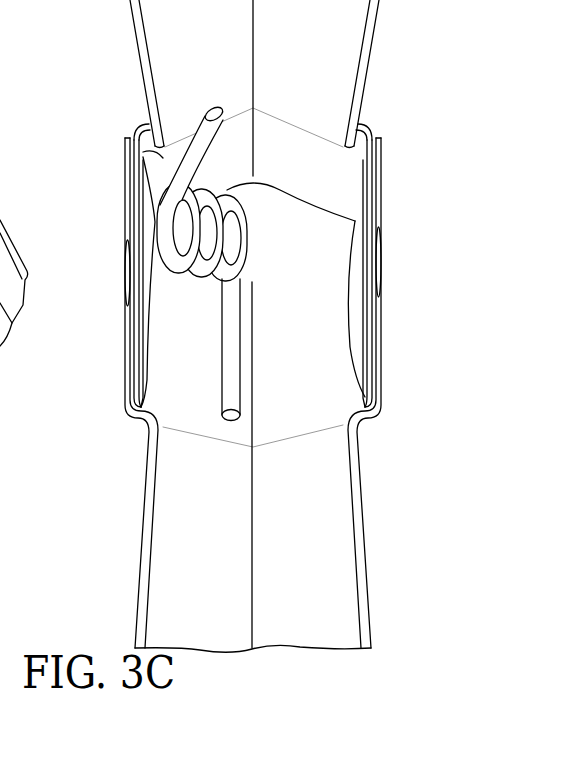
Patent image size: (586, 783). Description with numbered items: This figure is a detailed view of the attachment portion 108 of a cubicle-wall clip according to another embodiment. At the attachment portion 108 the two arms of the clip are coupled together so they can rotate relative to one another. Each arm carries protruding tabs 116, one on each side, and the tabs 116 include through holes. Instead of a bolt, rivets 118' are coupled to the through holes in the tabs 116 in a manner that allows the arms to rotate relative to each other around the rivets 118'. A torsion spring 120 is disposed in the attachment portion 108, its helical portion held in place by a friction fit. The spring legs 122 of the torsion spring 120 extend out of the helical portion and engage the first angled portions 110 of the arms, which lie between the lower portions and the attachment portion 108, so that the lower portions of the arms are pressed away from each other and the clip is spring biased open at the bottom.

The attachment portion 108 is at (406, 146).
The first angled portion 110 is at (366, 54).
The protruding tabs 116 is at (133, 131).
The rivets 118' is at (296, 266).
The torsion spring 120 is at (237, 240).
The spring legs 122 is at (200, 128).